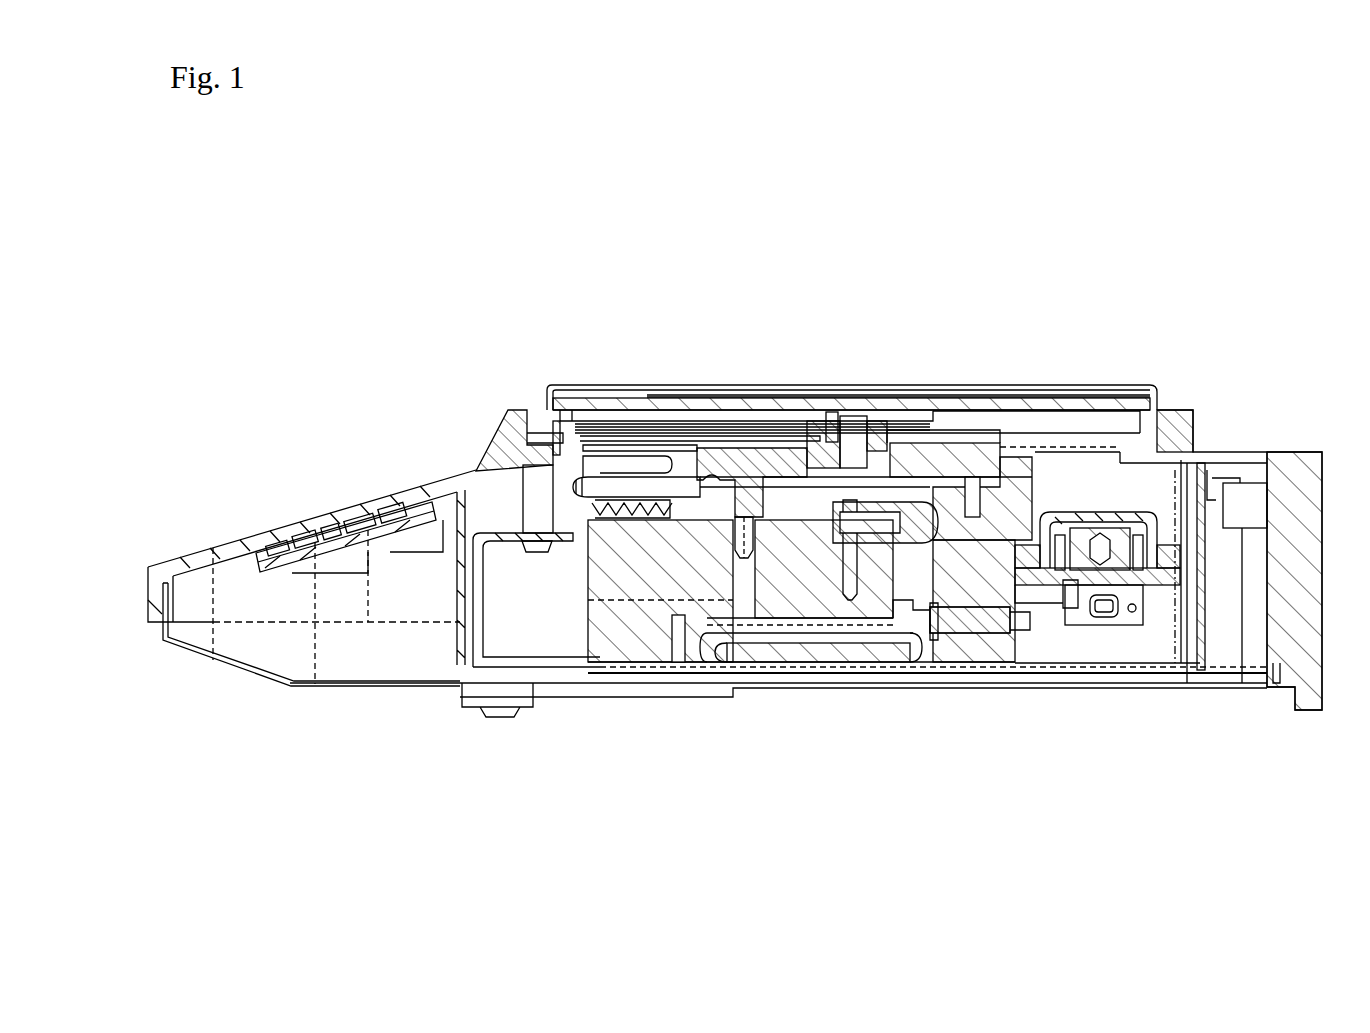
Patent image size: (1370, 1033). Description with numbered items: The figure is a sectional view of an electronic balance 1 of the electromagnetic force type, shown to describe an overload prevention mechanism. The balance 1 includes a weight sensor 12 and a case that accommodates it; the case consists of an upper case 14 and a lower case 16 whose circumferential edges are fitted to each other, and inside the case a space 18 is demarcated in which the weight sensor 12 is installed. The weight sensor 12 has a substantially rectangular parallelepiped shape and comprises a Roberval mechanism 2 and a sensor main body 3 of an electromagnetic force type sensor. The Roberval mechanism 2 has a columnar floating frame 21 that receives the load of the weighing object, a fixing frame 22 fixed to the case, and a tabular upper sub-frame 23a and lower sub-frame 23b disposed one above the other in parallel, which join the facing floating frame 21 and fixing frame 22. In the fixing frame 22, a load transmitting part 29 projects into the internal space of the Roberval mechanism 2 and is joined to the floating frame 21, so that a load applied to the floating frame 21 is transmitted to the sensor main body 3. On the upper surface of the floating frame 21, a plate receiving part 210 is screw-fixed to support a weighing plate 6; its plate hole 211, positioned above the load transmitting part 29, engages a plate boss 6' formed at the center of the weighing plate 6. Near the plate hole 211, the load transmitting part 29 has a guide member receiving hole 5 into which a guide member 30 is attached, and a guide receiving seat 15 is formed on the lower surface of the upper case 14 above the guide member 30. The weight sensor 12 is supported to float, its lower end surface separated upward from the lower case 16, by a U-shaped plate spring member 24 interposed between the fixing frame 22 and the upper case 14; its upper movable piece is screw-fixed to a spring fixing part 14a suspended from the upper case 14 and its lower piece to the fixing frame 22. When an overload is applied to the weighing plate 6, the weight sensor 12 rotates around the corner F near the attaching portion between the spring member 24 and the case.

The balance 1 is at (481, 293).
The Roberval mechanism 2 is at (585, 633).
The sensor main body 3 is at (1086, 517).
The guide member receiving hole 5 is at (748, 550).
The weighing plate 6 is at (852, 384).
The plate boss 6' is at (833, 377).
The weight sensor 12 is at (586, 606).
The upper case 14 is at (440, 480).
The spring fixing part 14a is at (535, 497).
The guide receiving seat 15 is at (707, 455).
The lower case 16 is at (270, 680).
The space 18 is at (518, 601).
The floating frame 21 is at (967, 653).
The fixing frame 22 is at (640, 637).
The upper sub-frame 23a is at (913, 473).
The lower sub-frame 23b is at (868, 652).
The spring member 24 is at (473, 617).
The load transmitting part 29 is at (810, 597).
The guide member 30 is at (747, 507).
The plate receiving part 210 is at (893, 460).
The plate hole 211 is at (863, 455).
The corner F is at (485, 527).